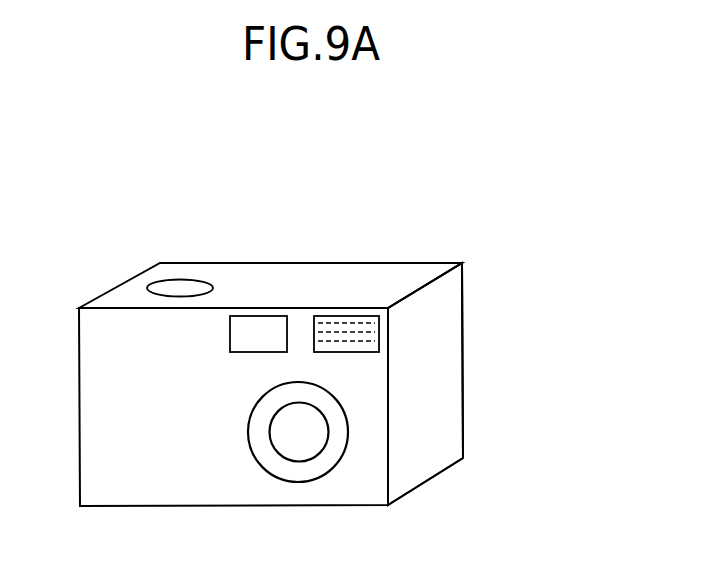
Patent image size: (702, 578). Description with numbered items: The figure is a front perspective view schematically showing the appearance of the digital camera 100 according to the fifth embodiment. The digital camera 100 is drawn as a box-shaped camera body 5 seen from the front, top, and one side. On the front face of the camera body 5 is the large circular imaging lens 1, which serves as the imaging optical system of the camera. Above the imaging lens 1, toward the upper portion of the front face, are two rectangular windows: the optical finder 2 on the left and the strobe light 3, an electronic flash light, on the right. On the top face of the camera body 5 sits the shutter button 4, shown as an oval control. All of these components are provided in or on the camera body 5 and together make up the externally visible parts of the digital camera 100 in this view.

The digital camera 100 is at (465, 199).
The imaging lens 1 is at (308, 422).
The optical finder 2 is at (270, 330).
The strobe light 3 is at (352, 327).
The shutter button 4 is at (180, 291).
The camera body 5 is at (436, 321).